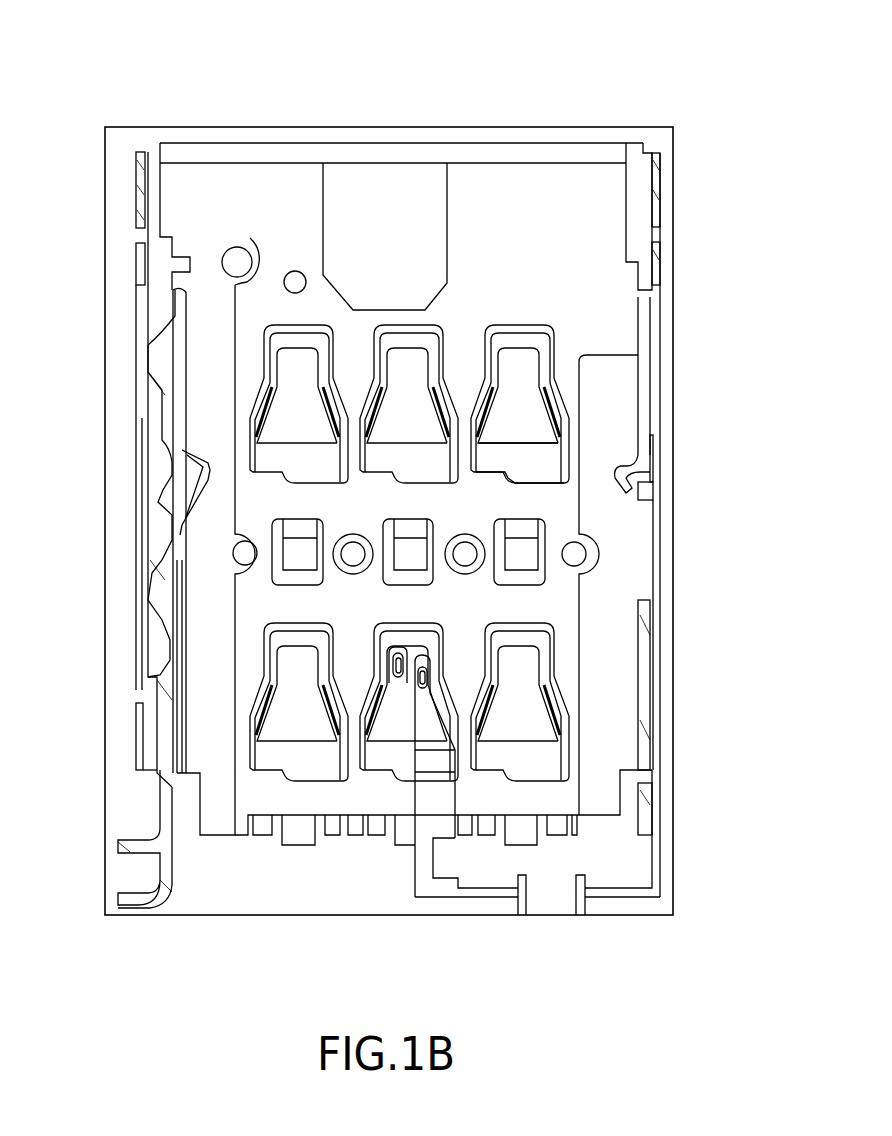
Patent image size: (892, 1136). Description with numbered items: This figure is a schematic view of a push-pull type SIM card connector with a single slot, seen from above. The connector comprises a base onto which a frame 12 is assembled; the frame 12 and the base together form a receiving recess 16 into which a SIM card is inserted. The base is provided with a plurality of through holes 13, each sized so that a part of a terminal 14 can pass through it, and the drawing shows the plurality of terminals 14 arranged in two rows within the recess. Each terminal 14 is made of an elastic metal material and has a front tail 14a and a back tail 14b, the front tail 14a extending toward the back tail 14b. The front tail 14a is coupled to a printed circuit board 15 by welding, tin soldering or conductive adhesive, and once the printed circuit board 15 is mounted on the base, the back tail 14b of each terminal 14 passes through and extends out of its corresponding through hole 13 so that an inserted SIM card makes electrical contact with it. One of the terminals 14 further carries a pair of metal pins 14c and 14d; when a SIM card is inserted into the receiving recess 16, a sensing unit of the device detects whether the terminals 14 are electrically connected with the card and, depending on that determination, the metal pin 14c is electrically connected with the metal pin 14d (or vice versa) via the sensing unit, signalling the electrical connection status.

The frame 12 is at (634, 212).
The through holes 13 is at (580, 355).
The terminals 14 is at (517, 611).
The front tail 14a is at (520, 415).
The back tail 14b is at (535, 472).
The metal pin 14c is at (400, 660).
The metal pin 14d is at (425, 683).
The printed circuit board 15 is at (520, 825).
The receiving recess 16 is at (620, 870).